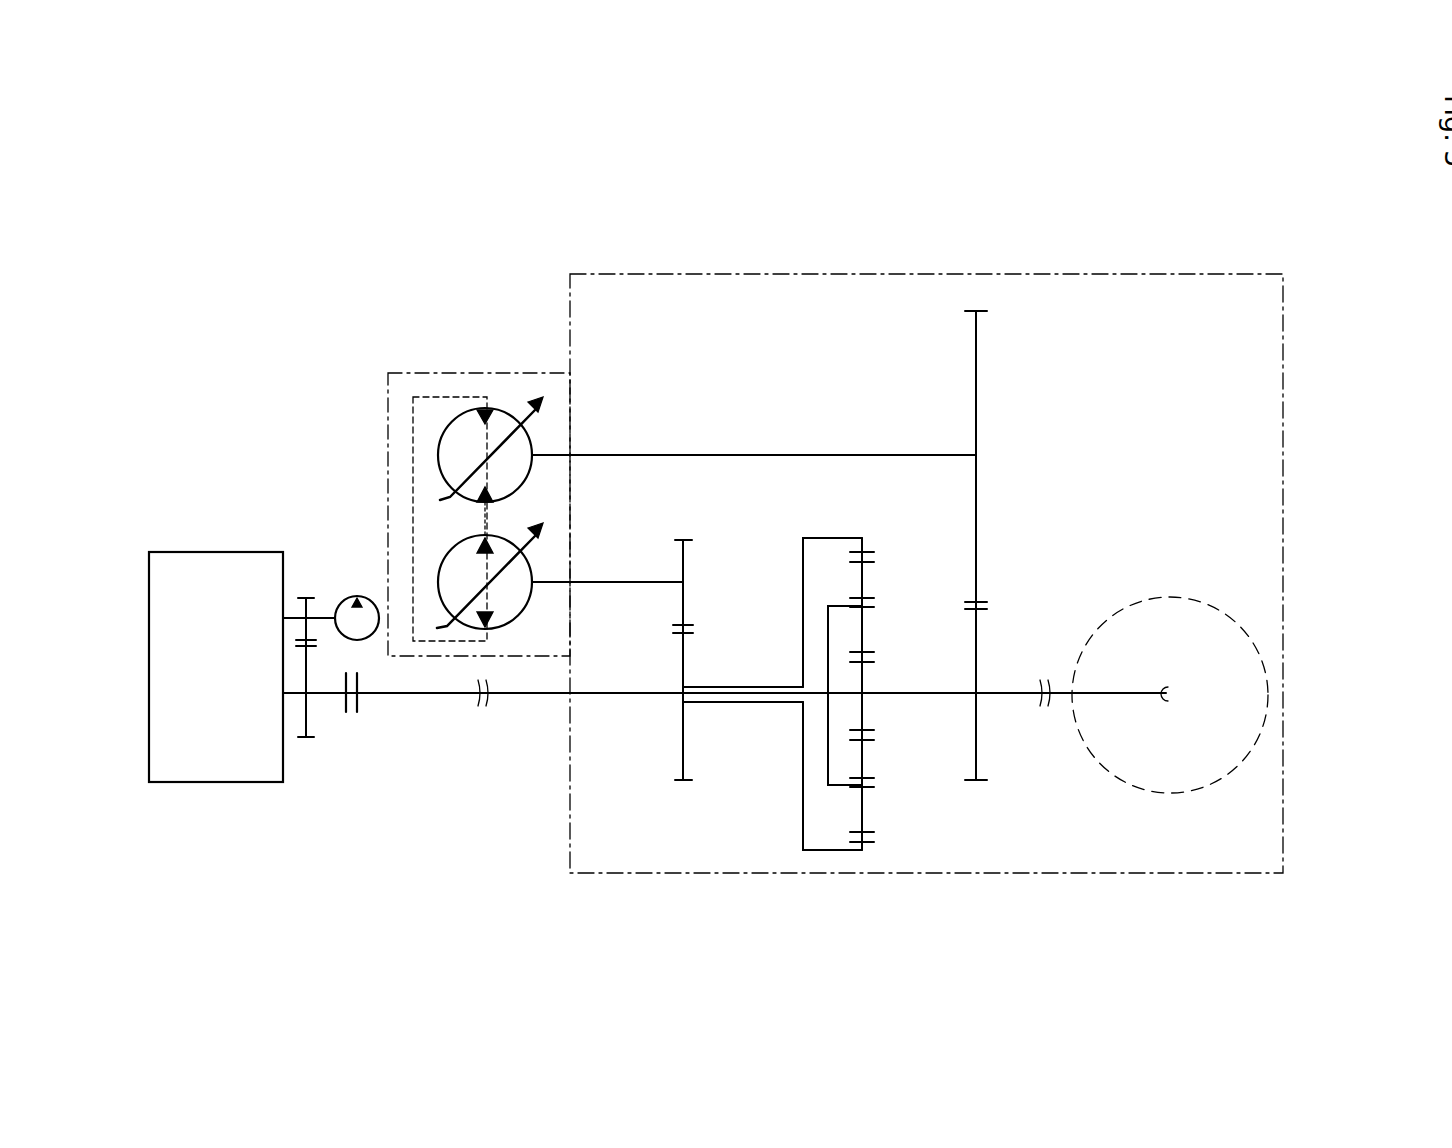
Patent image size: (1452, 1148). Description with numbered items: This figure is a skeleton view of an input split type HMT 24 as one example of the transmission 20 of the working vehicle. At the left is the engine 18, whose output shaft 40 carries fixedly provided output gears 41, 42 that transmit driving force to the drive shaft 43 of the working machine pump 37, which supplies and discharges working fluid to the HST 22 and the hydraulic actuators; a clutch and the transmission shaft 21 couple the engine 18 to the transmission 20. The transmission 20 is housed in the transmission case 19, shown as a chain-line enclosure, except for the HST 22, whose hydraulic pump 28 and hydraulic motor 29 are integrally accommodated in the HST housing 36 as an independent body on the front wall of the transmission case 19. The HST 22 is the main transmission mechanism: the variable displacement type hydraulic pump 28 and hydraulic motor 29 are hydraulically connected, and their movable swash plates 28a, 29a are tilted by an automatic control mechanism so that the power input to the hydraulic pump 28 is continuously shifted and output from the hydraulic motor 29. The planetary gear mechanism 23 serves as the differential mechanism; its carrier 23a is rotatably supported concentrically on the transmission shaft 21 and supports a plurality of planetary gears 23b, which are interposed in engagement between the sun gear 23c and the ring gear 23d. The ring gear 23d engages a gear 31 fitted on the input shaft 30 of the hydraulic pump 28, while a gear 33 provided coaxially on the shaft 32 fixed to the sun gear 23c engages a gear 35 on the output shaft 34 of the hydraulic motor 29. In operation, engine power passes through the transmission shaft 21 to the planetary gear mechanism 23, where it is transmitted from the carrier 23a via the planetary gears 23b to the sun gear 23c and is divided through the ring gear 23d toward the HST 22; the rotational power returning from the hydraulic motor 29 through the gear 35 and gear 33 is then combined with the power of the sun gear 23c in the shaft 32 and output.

The engine 18 is at (222, 552).
The transmission case 19 is at (731, 273).
The transmission 20 is at (333, 263).
The transmission shaft 21 is at (437, 695).
The HST 22 is at (403, 408).
The planetary gear mechanism 23 is at (789, 697).
The carrier 23a is at (828, 636).
The planetary gear 23b is at (866, 570).
The sun gear 23c is at (866, 712).
The ring gear 23d is at (803, 776).
The HMT 24 is at (636, 393).
The hydraulic pump 28 is at (438, 580).
The movable swash plate 28a is at (492, 580).
The hydraulic motor 29 is at (438, 455).
The movable swash plate 29a is at (438, 500).
The input shaft 30 is at (601, 580).
The gear 31 is at (689, 540).
The shaft 32 is at (1022, 698).
The gear 33 is at (977, 648).
The output shaft 34 is at (757, 455).
The gear 35 is at (977, 416).
The HST housing 36 is at (511, 372).
The working machine pump 37 is at (366, 640).
The output shaft 40 is at (333, 697).
The output gear 41 is at (305, 720).
The output gear 42 is at (303, 630).
The drive shaft 43 is at (318, 612).